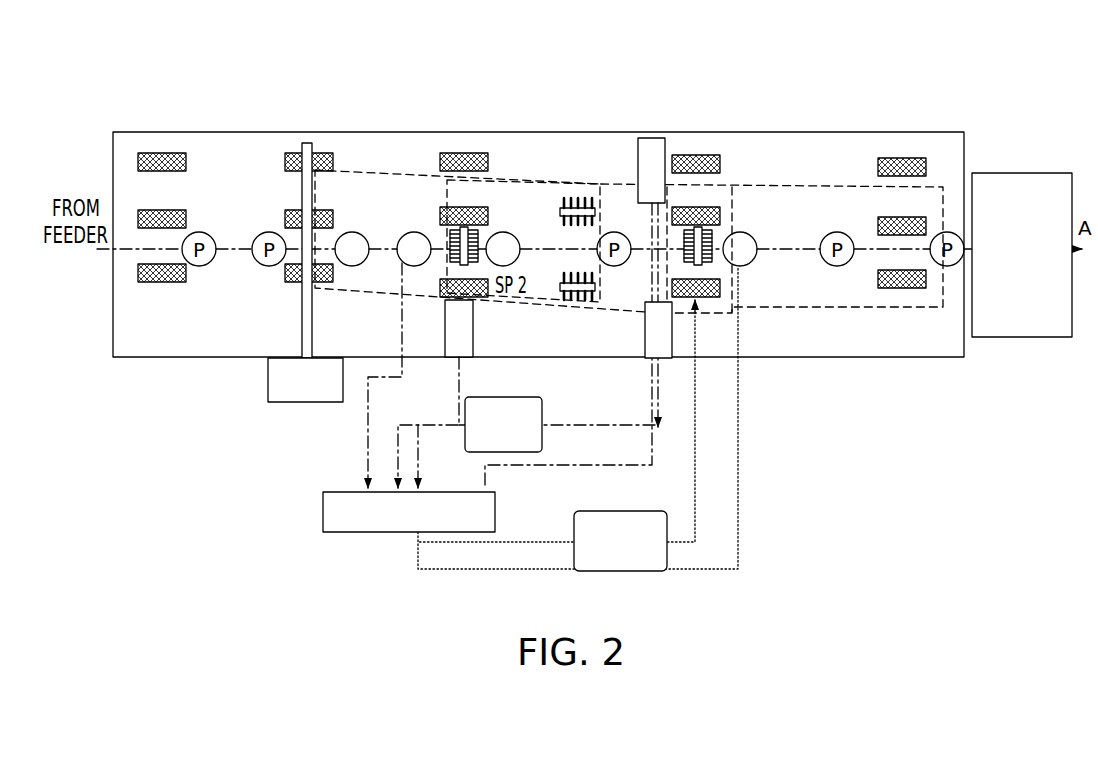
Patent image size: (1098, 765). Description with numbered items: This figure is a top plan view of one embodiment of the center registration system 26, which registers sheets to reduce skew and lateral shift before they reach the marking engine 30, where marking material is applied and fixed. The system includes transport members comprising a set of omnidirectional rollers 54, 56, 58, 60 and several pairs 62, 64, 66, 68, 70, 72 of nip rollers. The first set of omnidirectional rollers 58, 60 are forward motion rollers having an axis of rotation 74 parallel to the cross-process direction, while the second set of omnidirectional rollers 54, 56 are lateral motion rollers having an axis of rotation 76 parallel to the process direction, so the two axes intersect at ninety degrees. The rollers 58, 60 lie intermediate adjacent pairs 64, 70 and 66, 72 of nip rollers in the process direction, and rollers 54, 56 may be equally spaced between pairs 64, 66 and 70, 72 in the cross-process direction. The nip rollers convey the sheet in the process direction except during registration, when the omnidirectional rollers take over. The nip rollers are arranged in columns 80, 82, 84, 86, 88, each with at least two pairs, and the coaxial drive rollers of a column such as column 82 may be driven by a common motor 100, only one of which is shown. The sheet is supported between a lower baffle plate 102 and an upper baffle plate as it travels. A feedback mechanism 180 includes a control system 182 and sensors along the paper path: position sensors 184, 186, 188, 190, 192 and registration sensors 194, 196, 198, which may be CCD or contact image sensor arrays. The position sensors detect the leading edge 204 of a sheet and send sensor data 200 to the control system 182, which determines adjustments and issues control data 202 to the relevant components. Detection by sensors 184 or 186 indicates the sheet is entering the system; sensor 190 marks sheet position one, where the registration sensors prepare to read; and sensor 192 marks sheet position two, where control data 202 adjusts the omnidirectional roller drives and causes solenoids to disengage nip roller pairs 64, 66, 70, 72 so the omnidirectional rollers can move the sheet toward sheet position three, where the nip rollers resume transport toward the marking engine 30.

The center registration system 26 is at (755, 58).
The marking engine 30 is at (1013, 168).
The omnidirectional roller 54 is at (476, 228).
The omnidirectional roller 56 is at (719, 238).
The omnidirectional roller 58 is at (568, 195).
The omnidirectional roller 60 is at (579, 302).
The nip roller pair 62 is at (467, 227).
The nip roller pair 64 is at (458, 228).
The nip roller pair 66 is at (440, 288).
The nip roller pair 68 is at (696, 155).
The nip roller pair 70 is at (712, 207).
The nip roller pair 72 is at (718, 290).
The axis of rotation 74 is at (594, 165).
The axis of rotation 76 is at (647, 263).
The column of nip rollers 80 is at (157, 133).
The column of nip rollers 82 is at (315, 133).
The column of nip rollers 84 is at (473, 132).
The column of nip rollers 86 is at (712, 133).
The column of nip rollers 88 is at (915, 143).
The motor 100 is at (267, 393).
The lower baffle plate 102 is at (205, 112).
The feedback mechanism 180 is at (352, 437).
The control system 182 is at (321, 508).
The position sensor 184 is at (352, 231).
The position sensor 186 is at (414, 231).
The position sensor 188 is at (510, 230).
The position sensor 190 is at (610, 190).
The position sensor 192 is at (754, 232).
The registration sensor 194 is at (473, 340).
The registration sensor 196 is at (671, 345).
The registration sensor 198 is at (661, 134).
The sensor data 200 is at (544, 415).
The control data 202 is at (669, 558).
The leading edge 204 is at (731, 282).